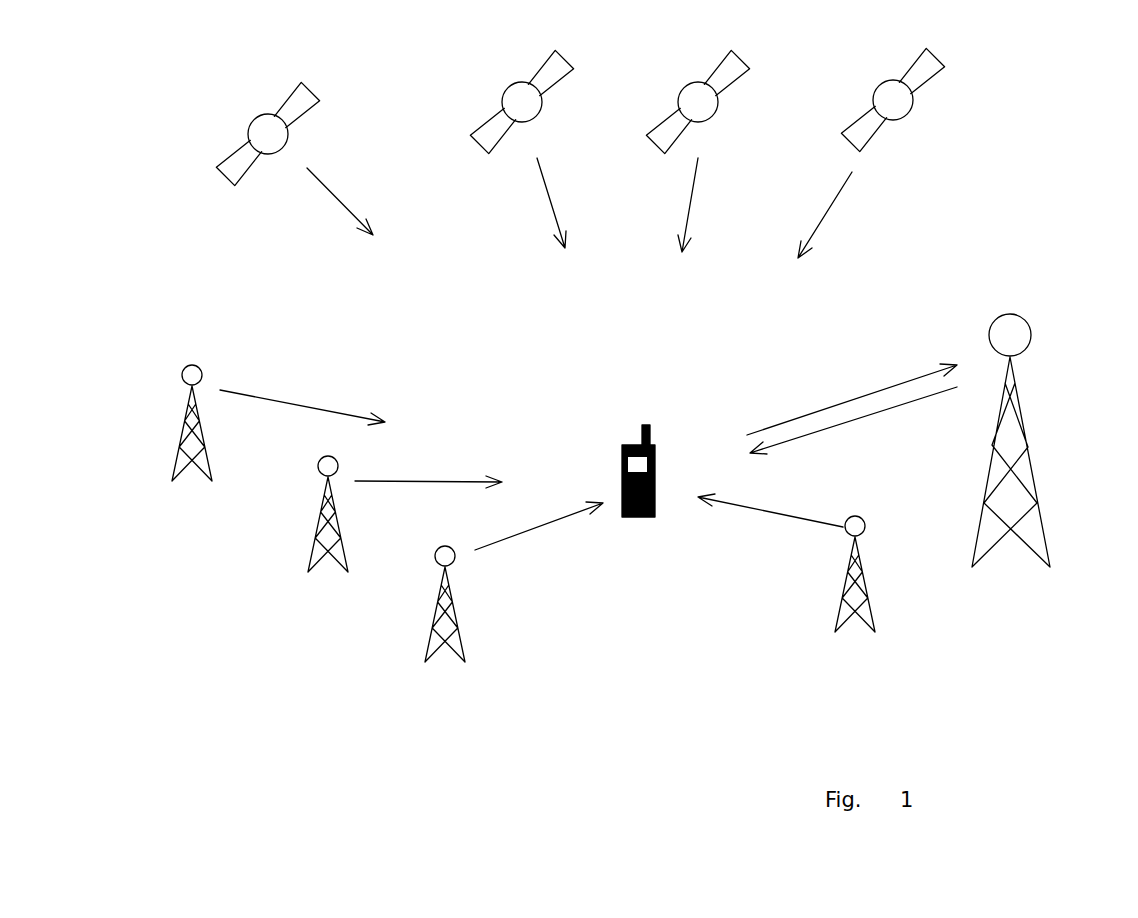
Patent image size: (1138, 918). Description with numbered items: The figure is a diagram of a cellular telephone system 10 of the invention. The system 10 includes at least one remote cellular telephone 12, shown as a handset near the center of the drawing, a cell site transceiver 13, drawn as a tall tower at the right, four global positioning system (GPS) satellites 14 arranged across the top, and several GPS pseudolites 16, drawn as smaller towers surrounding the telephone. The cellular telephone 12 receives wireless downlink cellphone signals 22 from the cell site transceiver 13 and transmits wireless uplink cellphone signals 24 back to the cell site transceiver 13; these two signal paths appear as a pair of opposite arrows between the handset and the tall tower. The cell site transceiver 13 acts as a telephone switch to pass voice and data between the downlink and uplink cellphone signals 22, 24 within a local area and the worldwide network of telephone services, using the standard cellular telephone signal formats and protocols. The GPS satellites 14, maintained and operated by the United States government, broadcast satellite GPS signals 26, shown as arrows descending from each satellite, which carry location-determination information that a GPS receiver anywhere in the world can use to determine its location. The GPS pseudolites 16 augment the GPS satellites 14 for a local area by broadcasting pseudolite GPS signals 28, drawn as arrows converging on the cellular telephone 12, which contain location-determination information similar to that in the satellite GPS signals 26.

The cellular telephone system 10 is at (301, 646).
The remote cellular telephone 12 is at (622, 457).
The cell site transceiver 13 is at (1030, 325).
The global positioning system (GPS) satellites 14 is at (248, 118).
The GPS pseudolites 16 is at (187, 373).
The wireless downlink cellphone signals 22 is at (865, 417).
The wireless uplink cellphone signals 24 is at (805, 415).
The satellite GPS signals 26 is at (333, 199).
The pseudolite GPS signals 28 is at (340, 408).